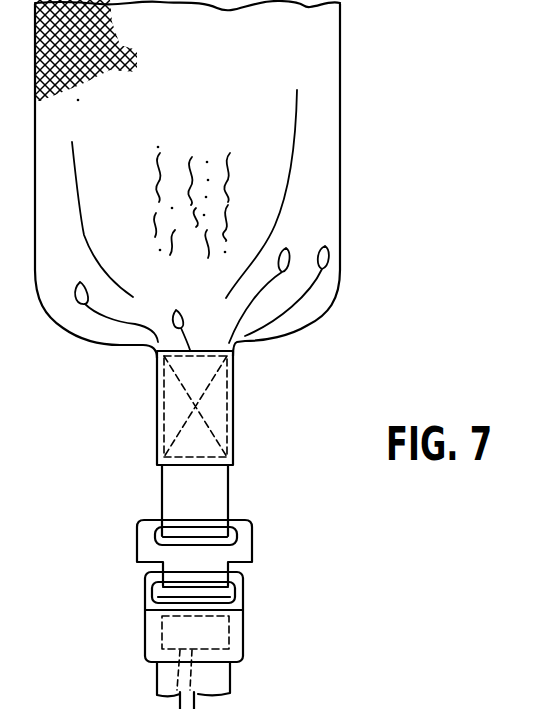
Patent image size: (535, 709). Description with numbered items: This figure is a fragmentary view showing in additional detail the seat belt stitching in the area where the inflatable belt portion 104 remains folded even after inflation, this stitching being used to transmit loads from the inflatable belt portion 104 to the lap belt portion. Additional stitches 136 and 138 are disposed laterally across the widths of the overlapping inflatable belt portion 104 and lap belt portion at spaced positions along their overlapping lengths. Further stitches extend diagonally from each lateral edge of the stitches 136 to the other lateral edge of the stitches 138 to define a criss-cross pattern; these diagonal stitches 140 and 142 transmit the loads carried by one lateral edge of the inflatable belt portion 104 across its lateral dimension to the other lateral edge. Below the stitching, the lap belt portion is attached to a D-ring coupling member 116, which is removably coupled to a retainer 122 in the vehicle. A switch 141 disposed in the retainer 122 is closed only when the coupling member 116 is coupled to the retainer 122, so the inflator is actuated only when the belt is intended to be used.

The inflatable belt portion 104 is at (330, 72).
The stitches 136 is at (202, 356).
The diagonal stitches 140 is at (205, 390).
The diagonal stitches 142 is at (188, 394).
The stitches 138 is at (200, 463).
The D-ring coupling member 116 is at (248, 537).
The retainer 122 is at (240, 636).
The switch 141 is at (148, 640).